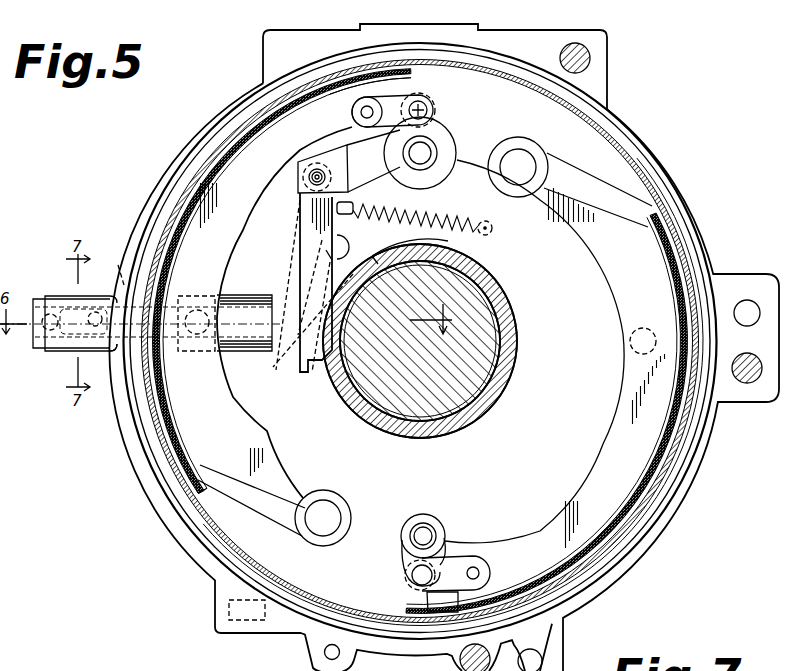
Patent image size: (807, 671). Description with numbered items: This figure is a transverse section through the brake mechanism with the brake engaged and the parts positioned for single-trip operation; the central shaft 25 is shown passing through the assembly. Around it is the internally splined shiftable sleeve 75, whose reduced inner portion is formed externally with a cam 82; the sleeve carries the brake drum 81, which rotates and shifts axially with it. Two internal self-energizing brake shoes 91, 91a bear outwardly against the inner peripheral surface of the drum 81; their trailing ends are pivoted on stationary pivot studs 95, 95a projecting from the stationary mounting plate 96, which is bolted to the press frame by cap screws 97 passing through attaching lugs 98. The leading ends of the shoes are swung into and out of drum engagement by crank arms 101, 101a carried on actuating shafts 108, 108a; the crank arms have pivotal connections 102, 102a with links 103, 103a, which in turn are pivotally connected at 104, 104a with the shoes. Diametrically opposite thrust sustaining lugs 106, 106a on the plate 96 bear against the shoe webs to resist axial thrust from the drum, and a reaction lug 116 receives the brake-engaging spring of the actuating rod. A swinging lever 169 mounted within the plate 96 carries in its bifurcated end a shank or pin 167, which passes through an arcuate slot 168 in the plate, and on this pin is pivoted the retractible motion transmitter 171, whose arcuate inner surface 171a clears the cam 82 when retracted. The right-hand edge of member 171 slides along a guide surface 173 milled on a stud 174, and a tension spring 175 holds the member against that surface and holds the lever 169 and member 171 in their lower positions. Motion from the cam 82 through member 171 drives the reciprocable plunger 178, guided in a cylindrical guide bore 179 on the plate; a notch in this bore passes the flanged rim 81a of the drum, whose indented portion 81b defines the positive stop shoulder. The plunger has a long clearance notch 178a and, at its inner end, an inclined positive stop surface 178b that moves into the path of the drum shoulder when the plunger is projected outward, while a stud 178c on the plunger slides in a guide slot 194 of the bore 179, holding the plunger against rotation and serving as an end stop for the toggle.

The axle 25 is at (477, 387).
The shiftable sleeve 75 is at (507, 330).
The brake drum 81 is at (249, 302).
The flanged rim 81a is at (185, 178).
The indented portion 81b is at (150, 428).
The cam 82 is at (333, 404).
The brake shoe 91 is at (215, 213).
The brake shoe 91a is at (695, 455).
The pivot stud 95 is at (323, 508).
The pivot stud 95a is at (520, 145).
The mounting plate 96 is at (197, 127).
The cap screws 97 is at (583, 58).
The attaching lugs 98 is at (745, 284).
The crank arm 101 is at (430, 133).
The crank arm 101a is at (407, 549).
The pivotal connection 102 is at (422, 98).
The pivotal connection 102a is at (418, 581).
The link 103 is at (383, 100).
The link 103a is at (447, 558).
The pivotal connection 104 is at (350, 113).
The pivotal connection 104a is at (477, 571).
The thrust sustaining lug 106 is at (200, 336).
The thrust sustaining lug 106a is at (640, 352).
The actuating shaft 108 is at (428, 148).
The actuating shaft 108a is at (425, 525).
The reaction lug 116 is at (215, 613).
The shank portion 167 is at (313, 181).
The arcuate slot 168 is at (300, 161).
The swinging lever 169 is at (380, 187).
The retractible motion transmitter 171 is at (310, 228).
The arcuate inner surface 171a is at (315, 363).
The guide surface 173 is at (323, 259).
The stud 174 is at (340, 247).
The tension spring 175 is at (443, 220).
The plunger 178 is at (140, 314).
The clearance notch 178a is at (130, 375).
The positive stop surface 178b is at (118, 265).
The stud 178c is at (50, 313).
The guide bore 179 is at (43, 350).
The guide slot 194 is at (96, 311).